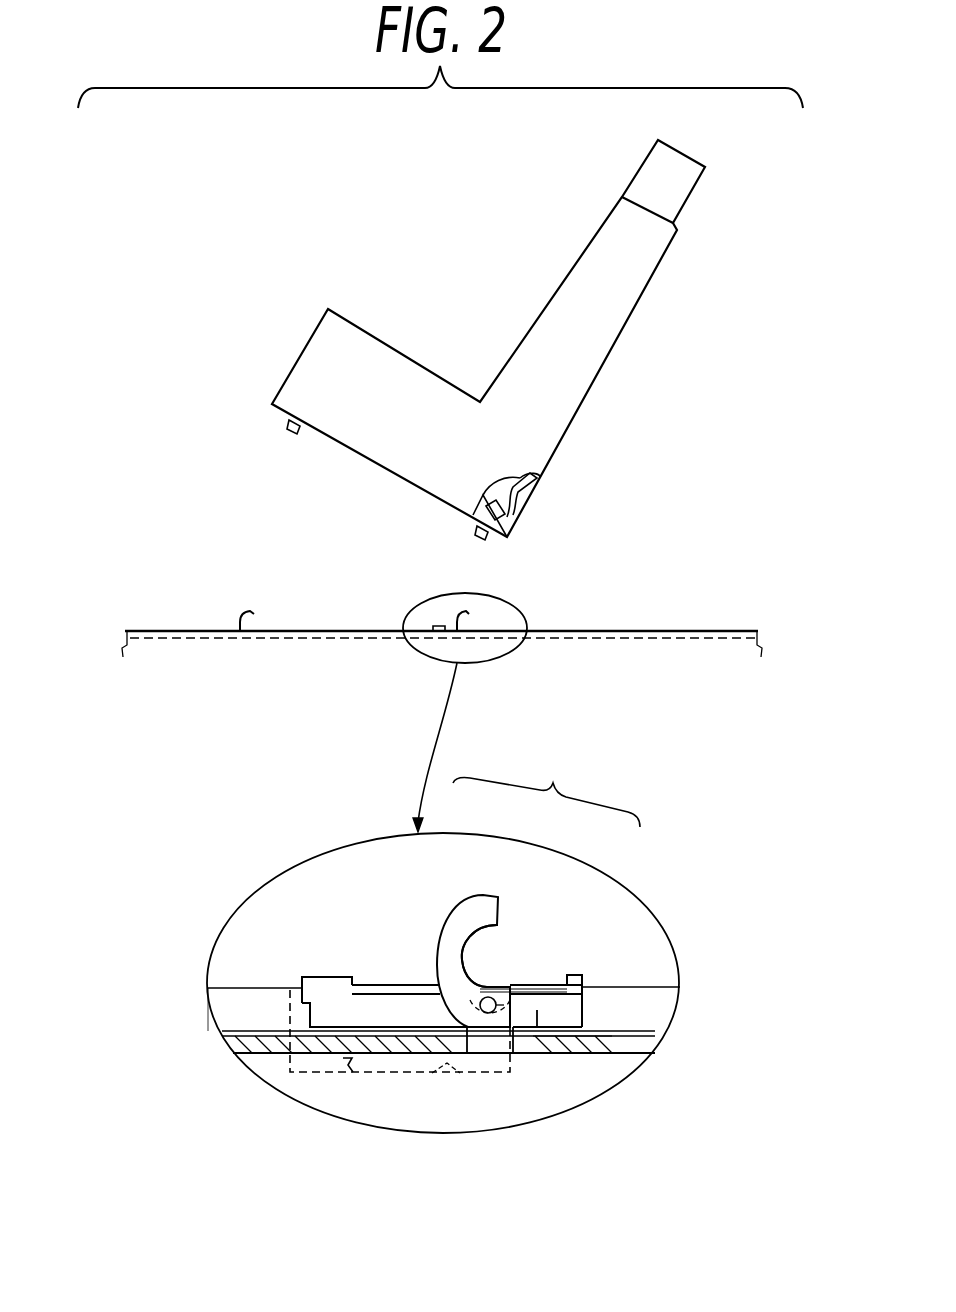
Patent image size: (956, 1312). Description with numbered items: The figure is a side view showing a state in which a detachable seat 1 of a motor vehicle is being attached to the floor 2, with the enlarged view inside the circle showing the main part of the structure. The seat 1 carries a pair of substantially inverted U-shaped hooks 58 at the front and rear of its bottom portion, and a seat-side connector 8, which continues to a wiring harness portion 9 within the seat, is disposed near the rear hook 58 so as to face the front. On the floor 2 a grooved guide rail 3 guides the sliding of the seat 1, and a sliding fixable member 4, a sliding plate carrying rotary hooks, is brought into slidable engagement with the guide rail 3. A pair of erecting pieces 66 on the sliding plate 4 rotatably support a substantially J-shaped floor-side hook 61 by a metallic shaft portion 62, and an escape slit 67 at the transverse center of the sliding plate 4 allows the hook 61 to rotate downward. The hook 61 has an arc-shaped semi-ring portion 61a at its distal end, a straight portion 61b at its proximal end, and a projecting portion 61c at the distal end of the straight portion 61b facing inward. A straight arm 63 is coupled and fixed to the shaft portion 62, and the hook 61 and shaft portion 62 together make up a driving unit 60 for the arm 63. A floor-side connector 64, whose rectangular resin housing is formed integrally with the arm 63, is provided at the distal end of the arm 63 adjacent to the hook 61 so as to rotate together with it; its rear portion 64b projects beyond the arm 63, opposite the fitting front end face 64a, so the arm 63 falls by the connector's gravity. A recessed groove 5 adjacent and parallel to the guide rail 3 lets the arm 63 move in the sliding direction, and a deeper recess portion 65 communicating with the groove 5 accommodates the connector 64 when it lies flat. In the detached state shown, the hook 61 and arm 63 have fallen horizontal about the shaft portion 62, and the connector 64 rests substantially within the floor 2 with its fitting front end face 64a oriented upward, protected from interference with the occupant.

The seat 1 is at (433, 372).
The floor 2 is at (185, 631).
The guide rail 3 is at (342, 638).
The sliding fixable member 4 is at (263, 1055).
The recessed groove 5 is at (222, 1012).
The seat-side connector 8 is at (488, 508).
The wiring harness portion 9 is at (507, 473).
The hook 58 is at (290, 430).
The driving unit 60 is at (546, 787).
The hook 61 is at (238, 612).
The semi-ring portion 61a is at (467, 957).
The straight portion 61b is at (537, 1037).
The projecting portion 61c is at (583, 968).
The shaft portion 62 is at (518, 987).
The arm 63 is at (405, 985).
The floor-side connector 64 is at (302, 1008).
The fitting front end face 64a is at (326, 977).
The rear portion 64b is at (345, 1064).
The recess portion 65 is at (433, 1075).
The erecting piece 66 is at (500, 997).
The escape slit 67 is at (572, 1043).